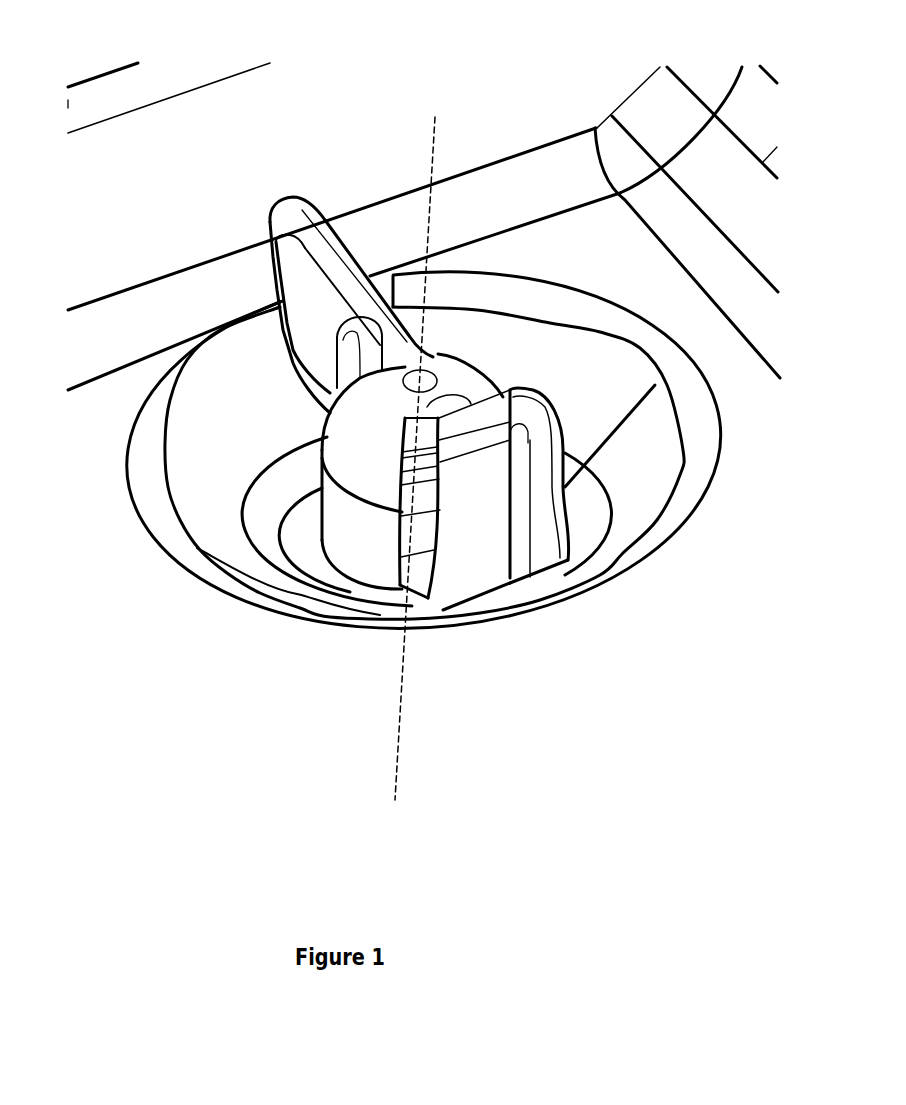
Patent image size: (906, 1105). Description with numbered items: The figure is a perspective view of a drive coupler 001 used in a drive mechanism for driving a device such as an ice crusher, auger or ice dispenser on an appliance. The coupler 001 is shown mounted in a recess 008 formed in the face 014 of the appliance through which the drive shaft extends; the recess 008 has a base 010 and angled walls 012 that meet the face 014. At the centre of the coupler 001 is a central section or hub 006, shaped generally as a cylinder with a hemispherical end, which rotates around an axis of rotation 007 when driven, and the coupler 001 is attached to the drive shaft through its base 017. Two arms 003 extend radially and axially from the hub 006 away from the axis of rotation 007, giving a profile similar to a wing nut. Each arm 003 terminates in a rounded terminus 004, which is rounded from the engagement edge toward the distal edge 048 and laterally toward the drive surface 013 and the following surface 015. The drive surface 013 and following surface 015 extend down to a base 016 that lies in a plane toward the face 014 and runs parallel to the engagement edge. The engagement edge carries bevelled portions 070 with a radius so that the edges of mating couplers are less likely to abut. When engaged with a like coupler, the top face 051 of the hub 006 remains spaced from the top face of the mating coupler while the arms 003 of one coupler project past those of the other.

The coupler 001 is at (499, 371).
The arms 003 is at (303, 303).
The rounded terminus 004 is at (292, 217).
The central section or hub 006 is at (353, 500).
The axis of rotation 007 is at (432, 153).
The recess 008 is at (236, 414).
The base of recess 010 is at (297, 548).
The angled walls 012 is at (237, 453).
The drive surface 013 is at (297, 351).
The face of appliance 014 is at (630, 291).
The following surface 015 is at (449, 554).
The base of arm 016 is at (487, 597).
The base of coupler 017 is at (357, 580).
The distal edge 048 is at (290, 300).
The top face 051 is at (387, 390).
The bevelled portions 070 is at (352, 288).